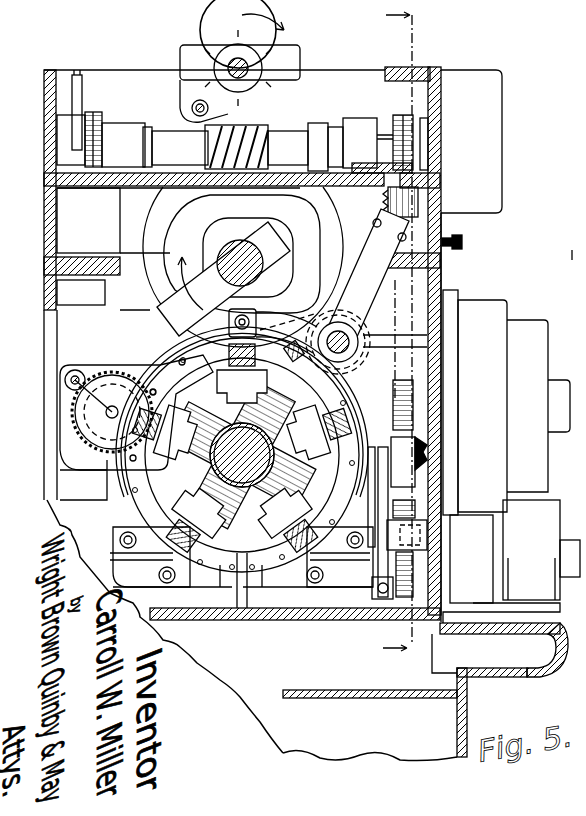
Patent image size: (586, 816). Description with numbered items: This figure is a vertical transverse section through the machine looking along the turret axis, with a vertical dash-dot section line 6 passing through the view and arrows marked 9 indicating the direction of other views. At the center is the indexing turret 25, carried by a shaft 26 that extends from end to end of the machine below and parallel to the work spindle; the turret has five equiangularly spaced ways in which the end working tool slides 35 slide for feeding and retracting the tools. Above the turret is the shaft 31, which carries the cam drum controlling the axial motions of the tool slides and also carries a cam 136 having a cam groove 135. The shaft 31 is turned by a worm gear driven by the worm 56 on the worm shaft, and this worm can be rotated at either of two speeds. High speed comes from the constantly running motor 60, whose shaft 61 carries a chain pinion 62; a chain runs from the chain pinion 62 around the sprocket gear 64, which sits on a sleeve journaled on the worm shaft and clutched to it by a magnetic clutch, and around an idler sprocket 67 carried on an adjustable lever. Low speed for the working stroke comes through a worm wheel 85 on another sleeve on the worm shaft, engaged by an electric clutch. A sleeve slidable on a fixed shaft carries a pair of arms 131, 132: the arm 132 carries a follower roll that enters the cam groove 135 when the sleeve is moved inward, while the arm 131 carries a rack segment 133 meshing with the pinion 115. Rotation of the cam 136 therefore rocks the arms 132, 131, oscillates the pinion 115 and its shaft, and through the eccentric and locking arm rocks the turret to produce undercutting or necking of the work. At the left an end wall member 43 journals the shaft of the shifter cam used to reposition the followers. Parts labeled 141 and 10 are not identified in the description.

The worm wheel 85 is at (99, 113).
The worm 56 is at (270, 132).
The sprocket gear 64 is at (406, 115).
The pinion 115 is at (420, 192).
The rack segment 133 is at (440, 245).
The section line 6 is at (398, 341).
The cam groove 135 is at (198, 223).
The cam 136 is at (320, 237).
The shaft 31 is at (252, 258).
The arm 131 is at (358, 297).
The bearing 141 is at (246, 309).
The arm 132 is at (287, 313).
The indexing turret 25 is at (248, 510).
The shaft 26 is at (263, 418).
The tool slide 35 is at (307, 456).
The rotation direction 9 is at (95, 330).
The end wall member 43 is at (115, 380).
The chain pinion 62 is at (395, 392).
The idler sprocket 67 is at (428, 475).
The shaft 61 is at (440, 410).
The motor 60 is at (527, 320).
The frame 10 is at (579, 257).